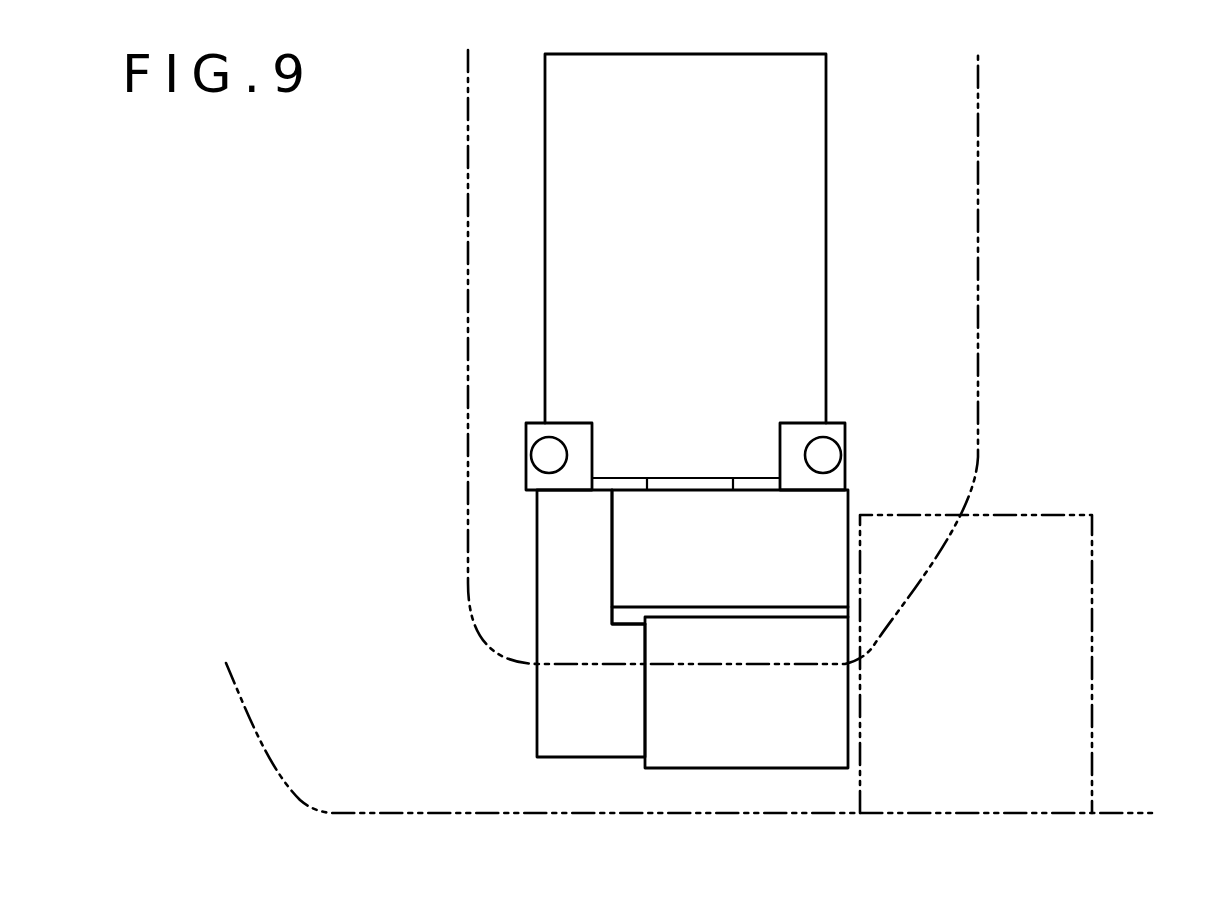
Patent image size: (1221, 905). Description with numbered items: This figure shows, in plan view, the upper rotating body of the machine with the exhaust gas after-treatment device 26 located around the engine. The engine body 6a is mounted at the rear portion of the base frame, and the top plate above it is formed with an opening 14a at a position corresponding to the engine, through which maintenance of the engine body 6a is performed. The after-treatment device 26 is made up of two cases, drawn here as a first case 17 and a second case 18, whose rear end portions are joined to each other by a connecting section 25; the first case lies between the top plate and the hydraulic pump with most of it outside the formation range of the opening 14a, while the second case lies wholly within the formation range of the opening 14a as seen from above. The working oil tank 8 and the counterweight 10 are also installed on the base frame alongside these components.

The engine body 6a is at (787, 216).
The opening 14a is at (975, 302).
The exhaust gas after-treatment device 26 is at (892, 486).
The working oil tank 8 is at (1055, 713).
The counterweight 10 is at (276, 737).
The upper mounting bracket (fastening part) 18 is at (690, 507).
The lower mounting bracket (fastening part) 17 is at (815, 740).
The connecting section 25 is at (555, 732).